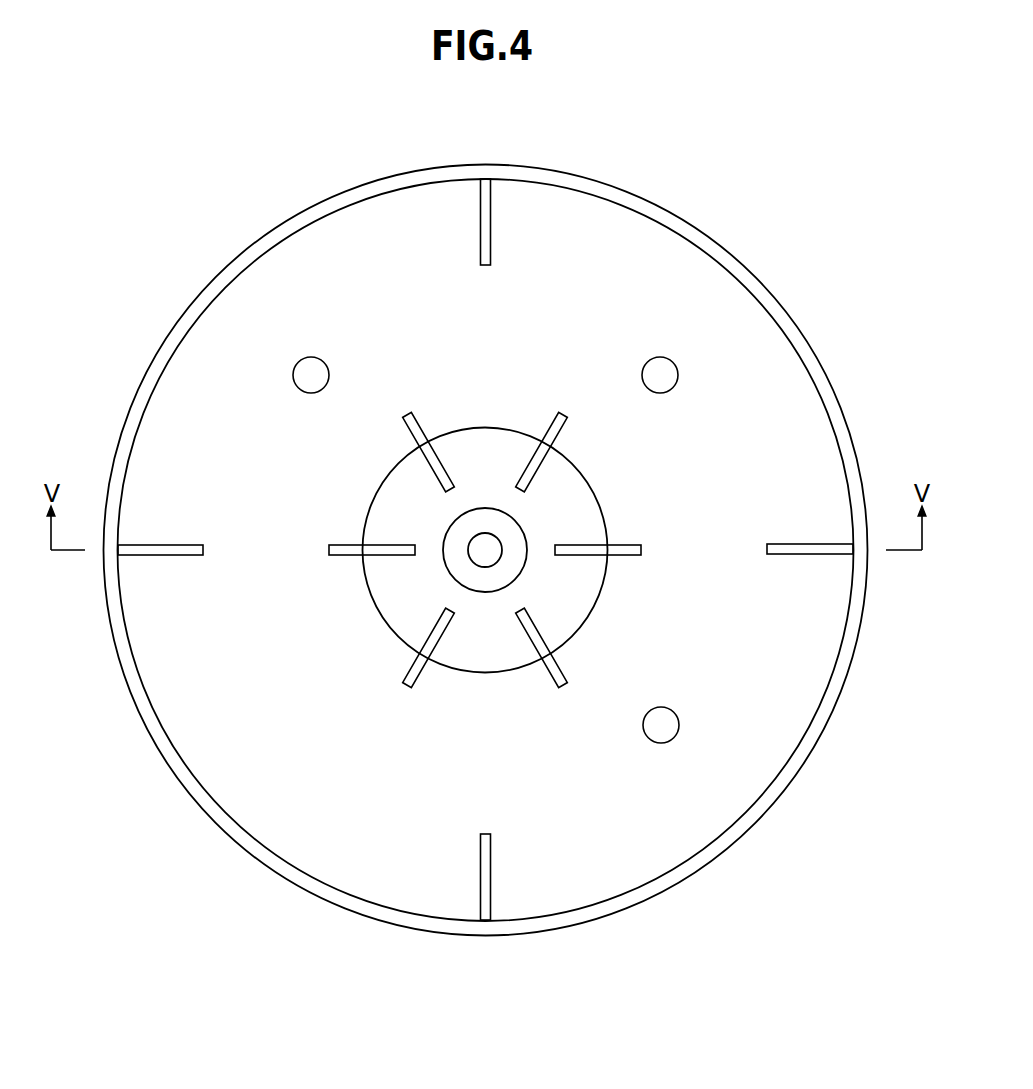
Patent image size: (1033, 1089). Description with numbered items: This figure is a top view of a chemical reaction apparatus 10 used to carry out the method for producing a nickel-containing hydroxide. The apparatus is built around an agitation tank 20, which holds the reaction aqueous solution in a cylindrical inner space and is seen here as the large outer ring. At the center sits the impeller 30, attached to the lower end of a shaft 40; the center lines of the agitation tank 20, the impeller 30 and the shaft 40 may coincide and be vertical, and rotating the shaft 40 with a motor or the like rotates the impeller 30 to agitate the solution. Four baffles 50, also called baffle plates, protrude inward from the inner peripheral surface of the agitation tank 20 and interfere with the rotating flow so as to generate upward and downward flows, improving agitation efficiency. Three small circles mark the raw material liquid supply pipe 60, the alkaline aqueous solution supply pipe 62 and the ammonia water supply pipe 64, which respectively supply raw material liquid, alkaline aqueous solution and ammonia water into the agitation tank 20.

The chemical reaction apparatus 10 is at (219, 257).
The agitation tank 20 is at (172, 341).
The impeller 30 is at (403, 612).
The shaft 40 is at (488, 556).
The baffle 50 is at (488, 224).
The raw material liquid supply pipe 60 is at (311, 373).
The alkaline aqueous solution supply pipe 62 is at (659, 373).
The ammonia water supply pipe 64 is at (662, 725).